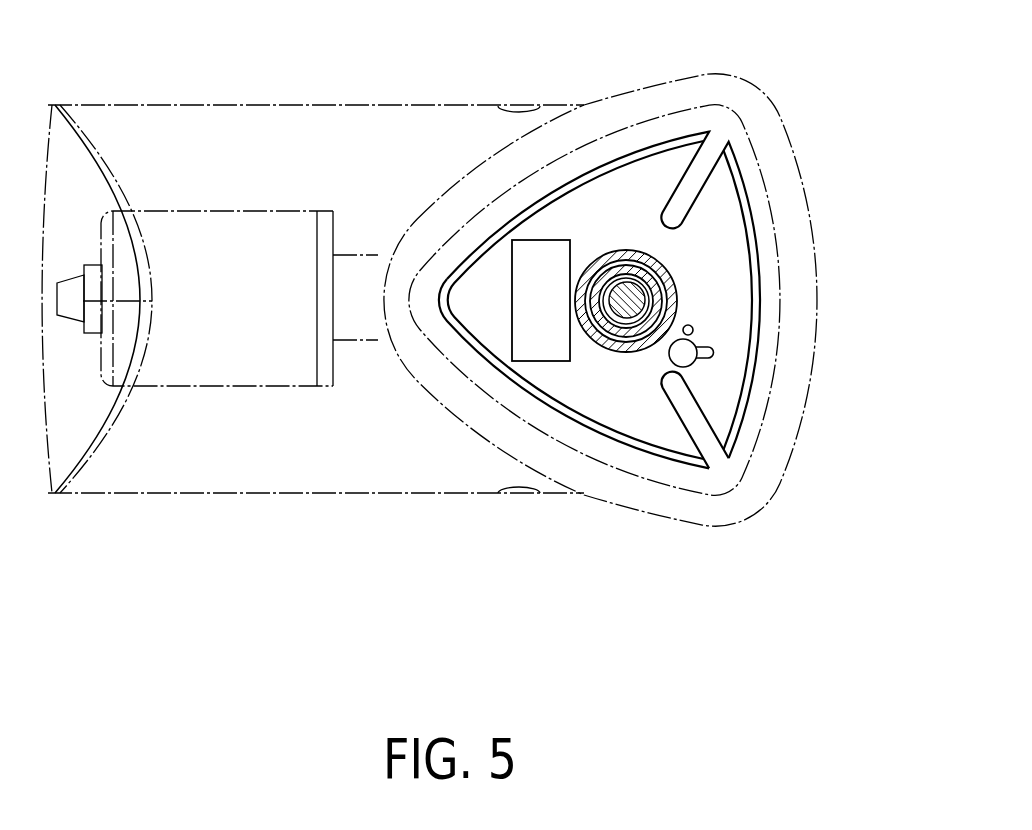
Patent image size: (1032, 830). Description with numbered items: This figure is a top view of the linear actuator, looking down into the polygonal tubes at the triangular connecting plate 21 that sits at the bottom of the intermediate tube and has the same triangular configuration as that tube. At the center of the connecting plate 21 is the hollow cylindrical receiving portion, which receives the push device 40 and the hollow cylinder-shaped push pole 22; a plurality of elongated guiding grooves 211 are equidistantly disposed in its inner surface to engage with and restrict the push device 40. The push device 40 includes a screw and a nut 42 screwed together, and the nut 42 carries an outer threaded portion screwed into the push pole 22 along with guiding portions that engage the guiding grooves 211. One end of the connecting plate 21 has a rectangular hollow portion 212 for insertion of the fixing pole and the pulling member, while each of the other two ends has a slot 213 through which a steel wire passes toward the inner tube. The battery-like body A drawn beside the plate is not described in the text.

The battery A is at (182, 222).
The connecting plate 21 is at (732, 312).
The guiding grooves 211 is at (632, 249).
The rectangular hollow portion 212 is at (513, 255).
The slot 213 is at (697, 425).
The push pole 22 is at (617, 249).
The push device 40 is at (637, 302).
The nut 42 is at (648, 270).